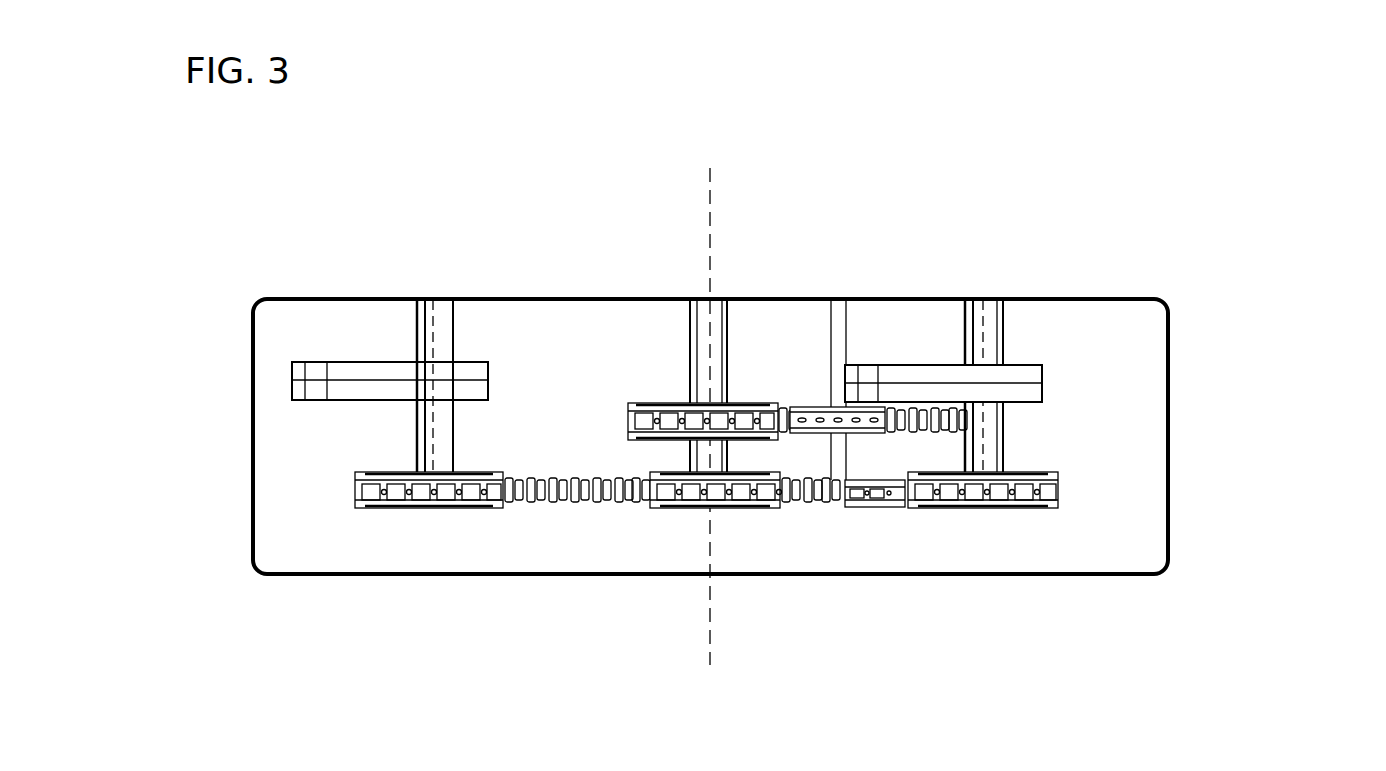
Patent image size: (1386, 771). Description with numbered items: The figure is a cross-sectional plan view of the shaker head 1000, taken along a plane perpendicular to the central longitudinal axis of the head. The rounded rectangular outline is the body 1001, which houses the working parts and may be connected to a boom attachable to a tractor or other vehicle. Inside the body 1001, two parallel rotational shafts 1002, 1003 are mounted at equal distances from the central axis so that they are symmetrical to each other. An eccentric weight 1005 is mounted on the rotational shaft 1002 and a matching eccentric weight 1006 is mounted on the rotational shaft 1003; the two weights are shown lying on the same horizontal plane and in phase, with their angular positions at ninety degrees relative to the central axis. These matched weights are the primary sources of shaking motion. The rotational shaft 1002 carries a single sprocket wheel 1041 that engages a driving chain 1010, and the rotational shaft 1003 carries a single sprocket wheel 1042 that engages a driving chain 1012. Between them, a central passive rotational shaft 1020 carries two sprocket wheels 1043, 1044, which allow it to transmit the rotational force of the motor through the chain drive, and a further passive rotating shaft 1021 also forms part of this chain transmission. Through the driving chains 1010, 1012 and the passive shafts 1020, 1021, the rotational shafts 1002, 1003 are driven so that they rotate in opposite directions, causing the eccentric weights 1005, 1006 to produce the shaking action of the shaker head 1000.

The tree shaker apparatus 1000 is at (736, 447).
The body 1001 is at (644, 436).
The rotational shaft 1002 is at (501, 336).
The rotational shaft 1003 is at (1079, 347).
The eccentric weight 1005 is at (300, 311).
The eccentric weight 1006 is at (1102, 360).
The driving chain 1010 is at (577, 579).
The driving chain 1012 is at (1033, 527).
The central passive rotational shaft 1020 is at (775, 416).
The passive rotating shaft 1021 is at (887, 359).
The sprocket wheel 1041 is at (429, 572).
The sprocket wheel 1042 is at (1052, 583).
The sprocket wheel 1043 is at (731, 589).
The sprocket wheel 1044 is at (659, 396).